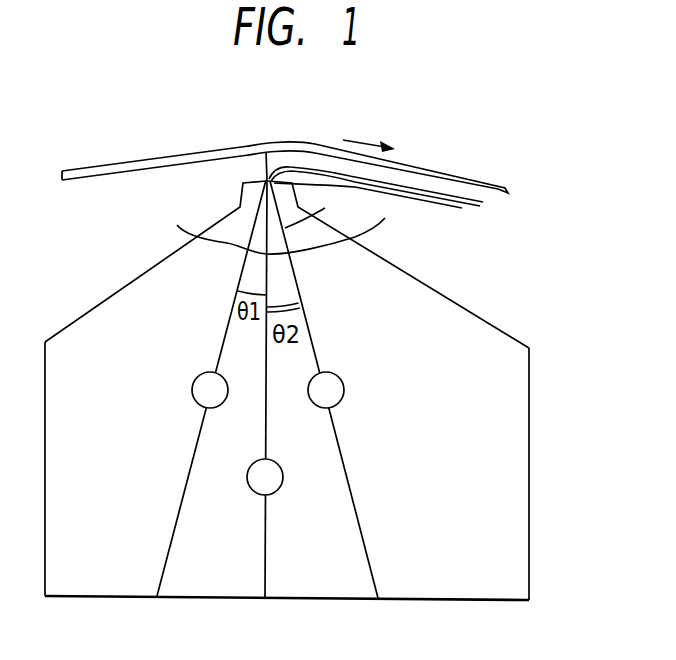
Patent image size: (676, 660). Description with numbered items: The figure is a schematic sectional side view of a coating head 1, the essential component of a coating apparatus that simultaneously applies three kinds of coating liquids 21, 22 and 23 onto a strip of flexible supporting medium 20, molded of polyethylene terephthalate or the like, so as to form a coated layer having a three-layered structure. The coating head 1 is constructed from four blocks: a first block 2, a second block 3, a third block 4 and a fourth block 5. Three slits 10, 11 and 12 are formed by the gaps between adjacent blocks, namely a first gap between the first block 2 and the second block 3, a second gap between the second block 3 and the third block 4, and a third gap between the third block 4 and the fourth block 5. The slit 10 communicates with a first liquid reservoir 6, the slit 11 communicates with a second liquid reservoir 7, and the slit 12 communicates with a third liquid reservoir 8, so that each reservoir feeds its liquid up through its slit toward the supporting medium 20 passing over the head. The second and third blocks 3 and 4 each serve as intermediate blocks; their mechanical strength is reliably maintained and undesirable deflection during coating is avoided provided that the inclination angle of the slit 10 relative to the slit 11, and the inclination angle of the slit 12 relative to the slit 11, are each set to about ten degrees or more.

The coating head 1 is at (489, 310).
The first block 2 is at (126, 312).
The second block 3 is at (250, 275).
The third block 4 is at (292, 288).
The fourth block 5 is at (387, 277).
The first liquid reservoir 6 is at (205, 387).
The second liquid reservoir 7 is at (270, 482).
The third liquid reservoir 8 is at (335, 388).
The slit 10 is at (216, 226).
The slit 11 is at (331, 228).
The slit 12 is at (316, 204).
The flexible supporting medium 20 is at (192, 153).
The coating liquid 21 is at (391, 175).
The coating liquid 22 is at (456, 192).
The coating liquid 23 is at (452, 209).